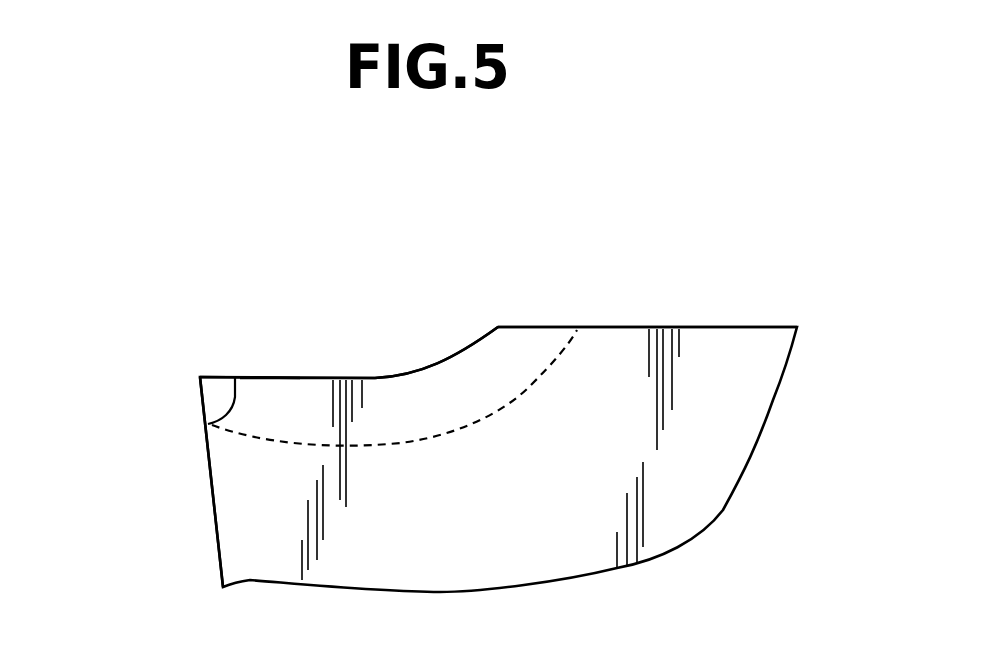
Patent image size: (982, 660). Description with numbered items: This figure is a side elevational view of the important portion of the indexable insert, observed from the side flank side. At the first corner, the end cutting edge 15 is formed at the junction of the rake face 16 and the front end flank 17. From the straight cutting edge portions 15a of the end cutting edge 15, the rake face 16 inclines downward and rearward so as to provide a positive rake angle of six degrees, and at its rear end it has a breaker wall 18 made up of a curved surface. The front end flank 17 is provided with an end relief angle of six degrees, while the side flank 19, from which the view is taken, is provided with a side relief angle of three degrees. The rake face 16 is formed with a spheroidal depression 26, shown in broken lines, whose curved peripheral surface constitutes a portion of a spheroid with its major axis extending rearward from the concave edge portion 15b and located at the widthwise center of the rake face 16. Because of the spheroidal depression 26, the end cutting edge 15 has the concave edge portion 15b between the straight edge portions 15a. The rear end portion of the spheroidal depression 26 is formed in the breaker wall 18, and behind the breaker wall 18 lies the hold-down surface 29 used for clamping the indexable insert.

The end cutting edge 15 is at (199, 378).
The straight cutting edge portion 15a is at (197, 376).
The concave edge portion 15b is at (235, 378).
The rake face 16 is at (303, 378).
The front end flank 17 is at (212, 487).
The breaker wall 18 is at (484, 342).
The side flank 19 is at (267, 527).
The spheroidal depression 26 is at (398, 443).
The hold-down surface 29 is at (728, 327).